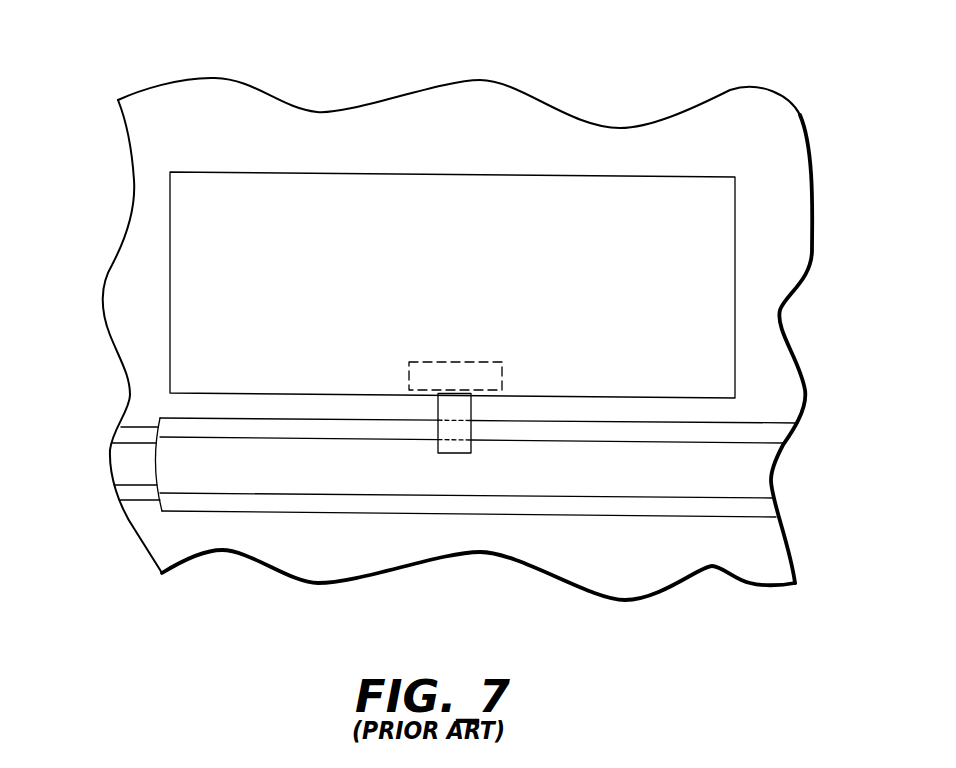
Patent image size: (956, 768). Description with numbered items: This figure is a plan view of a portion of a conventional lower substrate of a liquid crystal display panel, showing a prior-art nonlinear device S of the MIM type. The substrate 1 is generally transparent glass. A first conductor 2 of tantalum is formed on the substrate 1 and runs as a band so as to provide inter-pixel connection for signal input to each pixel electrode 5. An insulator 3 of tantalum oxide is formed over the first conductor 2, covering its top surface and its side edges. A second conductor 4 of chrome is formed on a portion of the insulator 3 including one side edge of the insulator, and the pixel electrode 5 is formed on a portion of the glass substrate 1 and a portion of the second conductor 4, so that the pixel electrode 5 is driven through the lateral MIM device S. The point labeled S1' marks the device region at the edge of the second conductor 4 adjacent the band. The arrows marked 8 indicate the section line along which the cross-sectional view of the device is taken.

The substrate 1 is at (778, 137).
The pixel electrode 5 is at (713, 233).
The insulator 3 is at (747, 482).
The conductor 2 is at (118, 460).
The conductor 4 is at (462, 410).
The nonlinear device S is at (477, 437).
The point S1' is at (394, 467).
The line 8— 8 is at (455, 67).